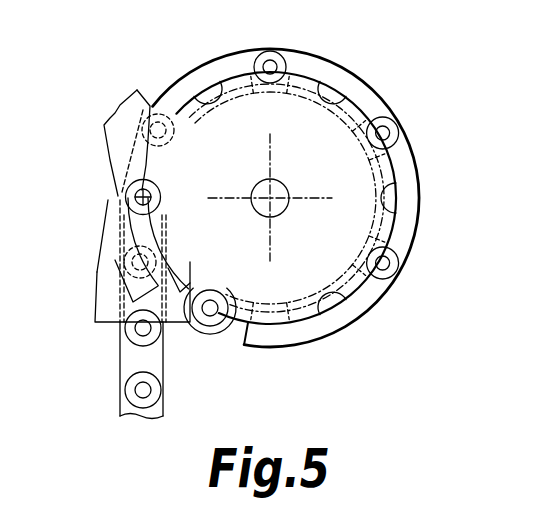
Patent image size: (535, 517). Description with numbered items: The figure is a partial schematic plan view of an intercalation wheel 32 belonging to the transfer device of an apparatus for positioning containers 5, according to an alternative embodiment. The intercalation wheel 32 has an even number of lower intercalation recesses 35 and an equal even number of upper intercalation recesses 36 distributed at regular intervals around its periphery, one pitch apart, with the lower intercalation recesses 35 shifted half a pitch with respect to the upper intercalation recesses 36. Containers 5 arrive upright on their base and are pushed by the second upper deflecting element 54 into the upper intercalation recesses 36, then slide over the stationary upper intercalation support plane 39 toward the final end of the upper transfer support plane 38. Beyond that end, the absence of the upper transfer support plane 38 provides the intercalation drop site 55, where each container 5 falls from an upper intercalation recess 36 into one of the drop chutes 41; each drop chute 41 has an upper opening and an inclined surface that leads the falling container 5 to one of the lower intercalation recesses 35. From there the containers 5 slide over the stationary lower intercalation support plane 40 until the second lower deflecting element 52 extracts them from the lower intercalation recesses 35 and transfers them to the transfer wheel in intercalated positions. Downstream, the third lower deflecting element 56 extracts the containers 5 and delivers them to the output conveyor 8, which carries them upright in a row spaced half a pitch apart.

The intercalation wheel 32 is at (400, 90).
The upper intercalation recesses 36 is at (336, 100).
The containers 5 is at (400, 134).
The upper transfer support plane 38 is at (105, 140).
The intercalation drop site 55 is at (226, 286).
The lower intercalation recesses 35 is at (405, 237).
The second upper deflecting element 54 is at (97, 285).
The drop chutes 41 is at (373, 303).
The third lower deflecting element 56 is at (96, 325).
The lower intercalation support plane 40 is at (309, 340).
The upper intercalation support plane 39 is at (168, 328).
The second lower deflecting element 52 is at (198, 332).
The output conveyor 8 is at (120, 377).